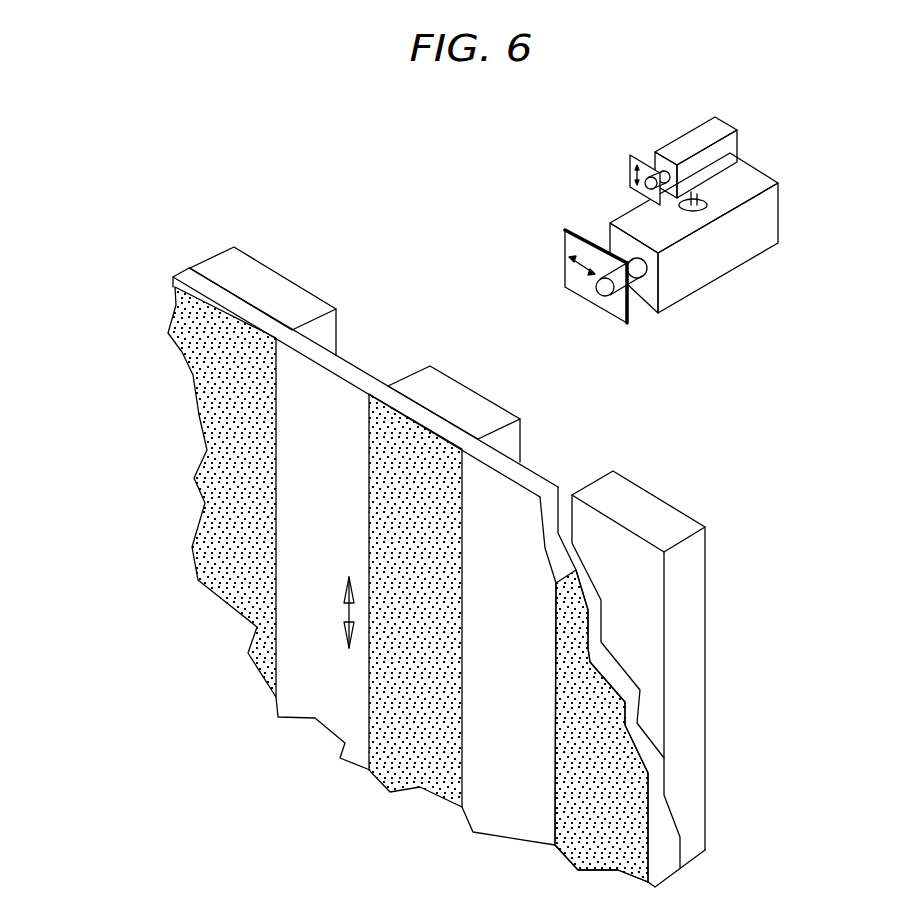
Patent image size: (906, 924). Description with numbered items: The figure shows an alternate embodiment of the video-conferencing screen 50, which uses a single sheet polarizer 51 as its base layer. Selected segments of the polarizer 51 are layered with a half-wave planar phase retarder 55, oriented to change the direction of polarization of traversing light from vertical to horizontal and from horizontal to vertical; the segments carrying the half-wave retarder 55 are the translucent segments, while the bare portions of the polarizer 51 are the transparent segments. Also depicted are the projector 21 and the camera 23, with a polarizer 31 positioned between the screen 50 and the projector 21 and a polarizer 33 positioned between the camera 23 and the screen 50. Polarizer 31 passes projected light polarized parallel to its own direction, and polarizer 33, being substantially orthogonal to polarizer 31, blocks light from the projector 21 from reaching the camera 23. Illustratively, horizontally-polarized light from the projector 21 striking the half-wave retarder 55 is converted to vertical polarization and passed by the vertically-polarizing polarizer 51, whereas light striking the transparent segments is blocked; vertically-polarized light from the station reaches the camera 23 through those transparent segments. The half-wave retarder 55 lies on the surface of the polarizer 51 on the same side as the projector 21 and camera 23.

The screen 50 is at (77, 725).
The single sheet polarizer 51 is at (182, 272).
The half-wave planar phase retarder 55 is at (278, 272).
The projector 21 is at (743, 267).
The camera 23 is at (720, 123).
The polarizer 31 is at (566, 242).
The polarizer 33 is at (628, 158).